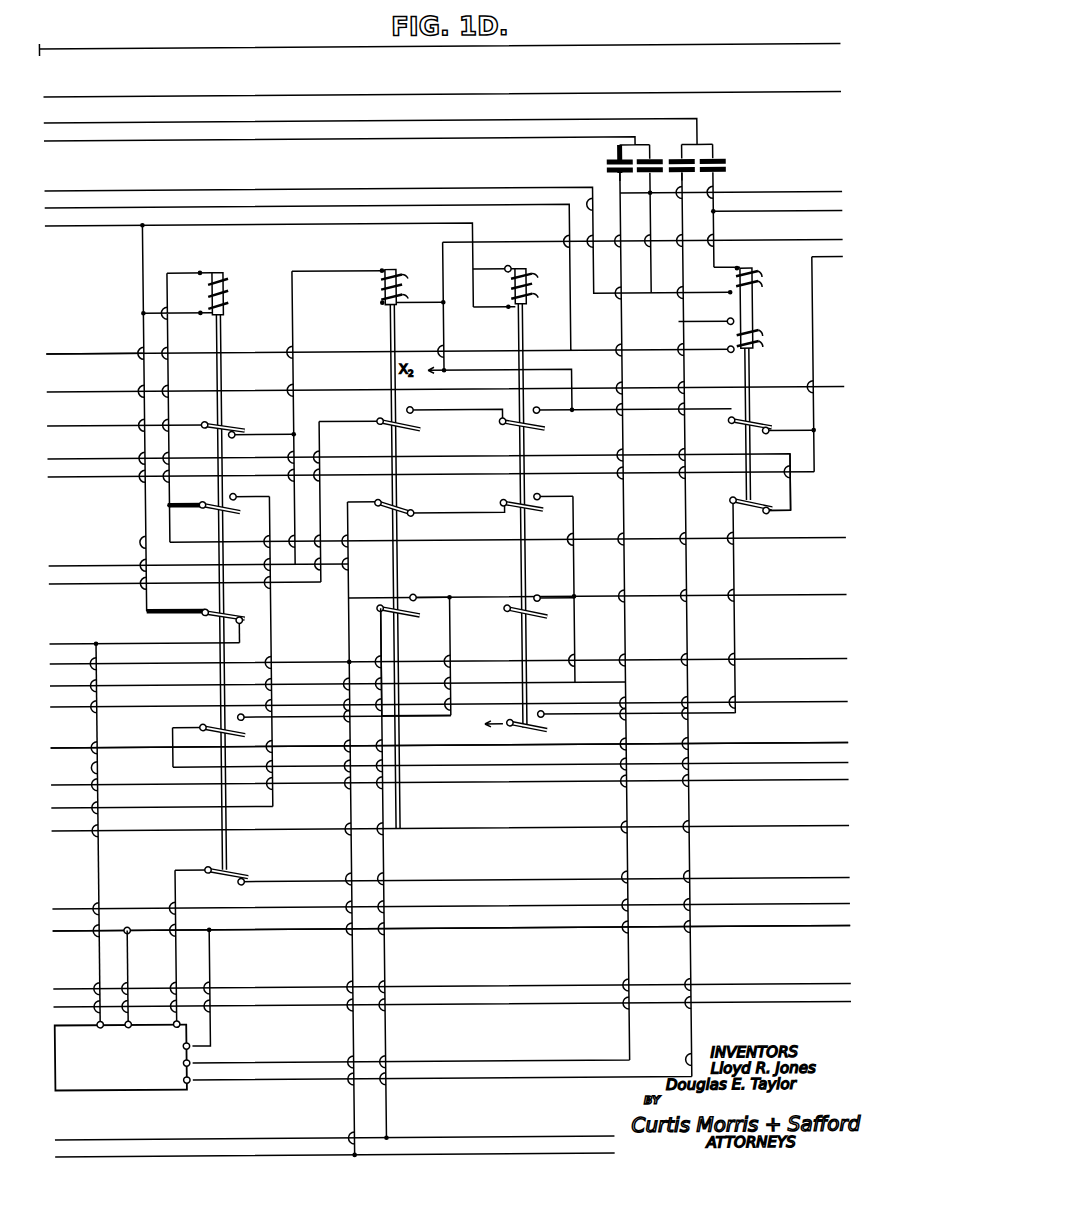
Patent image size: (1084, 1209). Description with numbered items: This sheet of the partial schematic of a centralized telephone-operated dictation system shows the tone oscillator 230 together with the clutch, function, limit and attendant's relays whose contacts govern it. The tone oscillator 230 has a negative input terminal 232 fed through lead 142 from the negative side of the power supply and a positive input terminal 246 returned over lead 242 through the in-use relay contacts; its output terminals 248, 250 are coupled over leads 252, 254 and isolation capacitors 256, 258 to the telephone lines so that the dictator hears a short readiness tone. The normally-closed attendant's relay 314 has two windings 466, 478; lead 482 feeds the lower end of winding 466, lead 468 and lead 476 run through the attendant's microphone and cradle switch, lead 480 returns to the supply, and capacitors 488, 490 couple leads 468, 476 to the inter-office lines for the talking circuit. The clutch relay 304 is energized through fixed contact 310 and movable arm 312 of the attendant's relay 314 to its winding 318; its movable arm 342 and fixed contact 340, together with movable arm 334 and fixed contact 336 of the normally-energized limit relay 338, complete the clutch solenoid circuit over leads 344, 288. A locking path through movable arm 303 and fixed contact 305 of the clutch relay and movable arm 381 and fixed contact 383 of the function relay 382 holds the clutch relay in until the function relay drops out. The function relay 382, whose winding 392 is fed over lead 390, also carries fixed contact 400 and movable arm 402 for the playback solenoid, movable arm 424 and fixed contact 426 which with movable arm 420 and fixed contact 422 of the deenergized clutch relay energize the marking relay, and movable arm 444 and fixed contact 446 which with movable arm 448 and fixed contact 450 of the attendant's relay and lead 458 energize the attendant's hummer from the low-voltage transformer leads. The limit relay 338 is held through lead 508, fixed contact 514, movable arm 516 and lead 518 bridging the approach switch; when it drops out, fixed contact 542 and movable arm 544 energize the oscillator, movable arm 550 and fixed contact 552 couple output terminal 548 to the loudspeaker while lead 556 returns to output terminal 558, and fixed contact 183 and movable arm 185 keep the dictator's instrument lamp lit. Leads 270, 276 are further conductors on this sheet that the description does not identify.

The lead 142 is at (50, 935).
The fixed contact 183 is at (231, 439).
The movable arm 185 is at (226, 427).
The tone oscillator 230 is at (144, 1099).
The negative input terminal 232 is at (122, 1024).
The lead 242 is at (50, 648).
The positive input terminal 246 is at (88, 1024).
The output terminal 248 is at (180, 1068).
The output terminal 250 is at (180, 1085).
The lead 252 is at (625, 228).
The lead 254 is at (680, 243).
The isolation capacitor 256 is at (614, 163).
The isolation capacitor 258 is at (674, 162).
The conductor 270 is at (46, 710).
The conductor 276 is at (50, 754).
The lead 288 is at (60, 1145).
The movable arm 303 is at (380, 428).
The clutch relay 304 is at (369, 295).
The fixed contact 305 is at (408, 414).
The fixed contact 310 is at (762, 431).
The movable arm 312 is at (752, 423).
The attendant's relay 314 is at (766, 320).
The clutch relay winding 318 is at (406, 283).
The movable arm 334 is at (212, 724).
The fixed contact 336 is at (234, 714).
The limit relay 338 is at (233, 278).
The fixed contact 340 is at (410, 598).
The movable arm 342 is at (395, 620).
The lead 344 is at (372, 609).
The movable arm 381 is at (504, 428).
The function relay 382 is at (518, 293).
The fixed contact 383 is at (528, 414).
The lead 390 is at (51, 357).
The function relay winding 392 is at (546, 294).
The fixed contact 400 is at (530, 598).
The movable arm 402 is at (502, 616).
The movable arm 420 is at (396, 507).
The fixed contact 422 is at (404, 518).
The movable arm 424 is at (529, 518).
The fixed contact 426 is at (535, 498).
The movable arm 444 is at (544, 731).
The fixed contact 446 is at (536, 713).
The movable arm 448 is at (756, 502).
The fixed contact 450 is at (760, 516).
The lead 458 is at (472, 244).
The attendant's relay winding 466 is at (734, 282).
The lead 468 is at (836, 216).
The lead 476 is at (836, 194).
The attendant's relay winding 478 is at (732, 342).
The lead 480 is at (48, 212).
The lead 482 is at (52, 198).
The capacitor 488 is at (718, 162).
The capacitor 490 is at (657, 158).
The lead 508 is at (50, 778).
The fixed contact 514 is at (230, 500).
The movable arm 516 is at (228, 517).
The lead 518 is at (193, 544).
The fixed contact 542 is at (233, 634).
The movable arm 544 is at (222, 612).
The output terminal 548 is at (170, 1024).
The movable arm 550 is at (231, 874).
The fixed contact 552 is at (236, 887).
The lead 556 is at (210, 955).
The output terminal 558 is at (180, 1052).